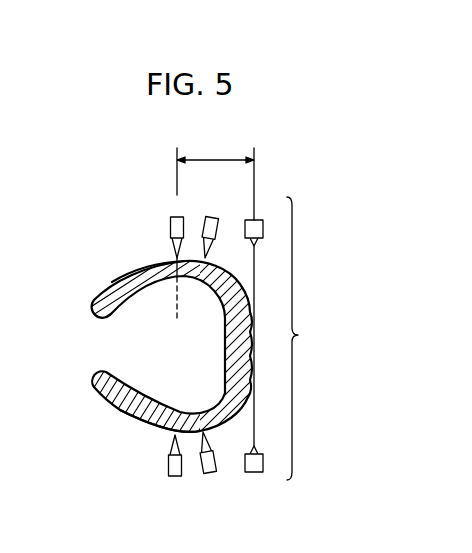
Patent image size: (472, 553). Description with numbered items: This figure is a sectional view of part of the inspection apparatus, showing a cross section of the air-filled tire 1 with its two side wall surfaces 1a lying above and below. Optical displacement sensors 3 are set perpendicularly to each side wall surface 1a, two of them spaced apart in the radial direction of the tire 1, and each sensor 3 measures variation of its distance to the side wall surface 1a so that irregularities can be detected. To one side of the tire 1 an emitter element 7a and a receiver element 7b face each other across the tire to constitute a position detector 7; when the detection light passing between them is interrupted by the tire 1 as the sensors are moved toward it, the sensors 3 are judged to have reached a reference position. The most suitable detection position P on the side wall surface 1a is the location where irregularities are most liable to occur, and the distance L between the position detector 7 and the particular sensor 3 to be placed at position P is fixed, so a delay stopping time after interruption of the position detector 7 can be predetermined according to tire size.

The tire 1 is at (91, 291).
The side wall surface 1a is at (157, 265).
The optical displacement sensor 3 is at (181, 218).
The position detector 7 is at (281, 347).
The emitter element 7a is at (257, 220).
The receiver element 7b is at (252, 471).
The most suitable detection position P is at (177, 303).
The distance between position detector and particular sensor L is at (215, 178).